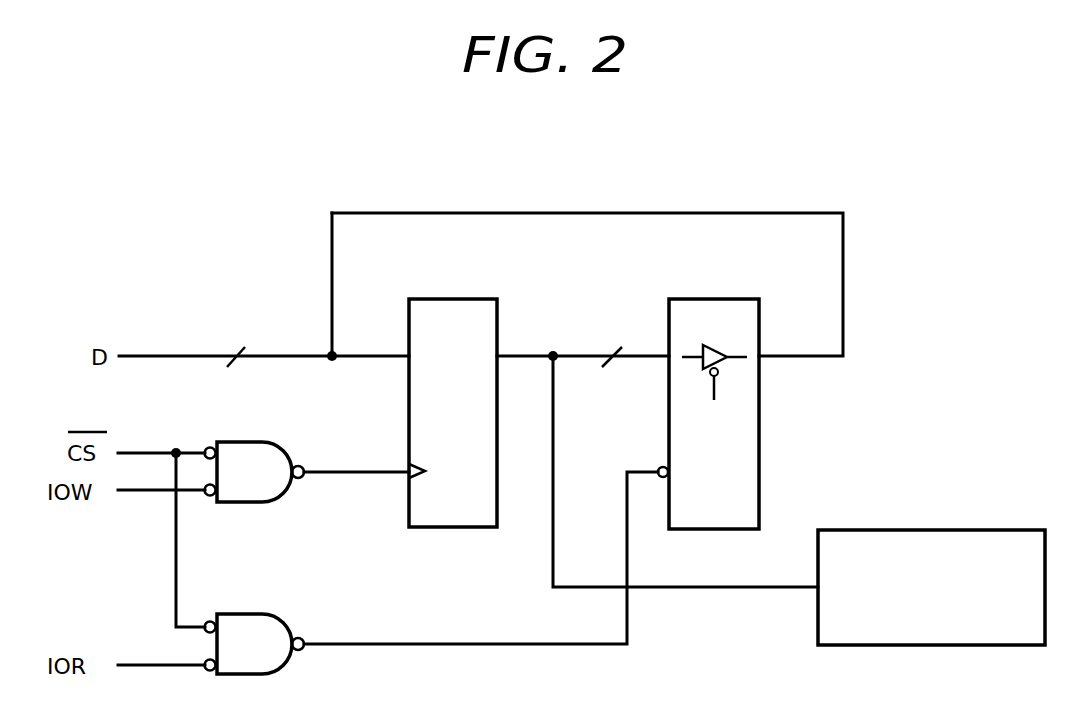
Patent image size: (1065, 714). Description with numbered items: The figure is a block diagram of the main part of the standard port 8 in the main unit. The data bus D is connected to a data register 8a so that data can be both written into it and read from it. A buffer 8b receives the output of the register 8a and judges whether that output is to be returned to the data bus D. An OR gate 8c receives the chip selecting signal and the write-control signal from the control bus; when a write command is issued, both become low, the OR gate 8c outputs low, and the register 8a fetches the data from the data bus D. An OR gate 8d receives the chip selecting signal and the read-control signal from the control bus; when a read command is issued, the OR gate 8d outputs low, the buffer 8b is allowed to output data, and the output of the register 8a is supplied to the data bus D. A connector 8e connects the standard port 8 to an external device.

The standard port 8 is at (612, 345).
The data register 8a is at (455, 298).
The buffer 8b is at (720, 298).
The OR gate 8c is at (258, 442).
The OR gate 8d is at (255, 613).
The connector 8e is at (892, 530).